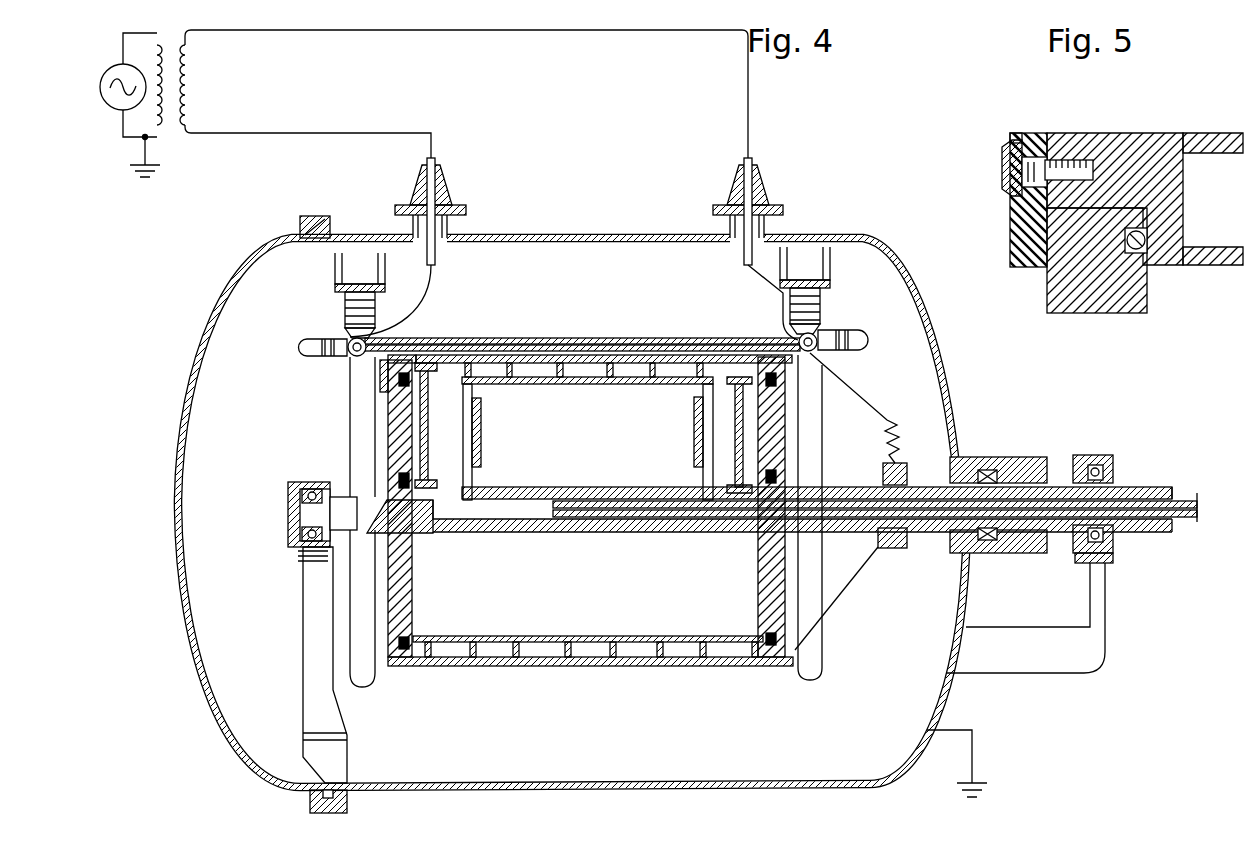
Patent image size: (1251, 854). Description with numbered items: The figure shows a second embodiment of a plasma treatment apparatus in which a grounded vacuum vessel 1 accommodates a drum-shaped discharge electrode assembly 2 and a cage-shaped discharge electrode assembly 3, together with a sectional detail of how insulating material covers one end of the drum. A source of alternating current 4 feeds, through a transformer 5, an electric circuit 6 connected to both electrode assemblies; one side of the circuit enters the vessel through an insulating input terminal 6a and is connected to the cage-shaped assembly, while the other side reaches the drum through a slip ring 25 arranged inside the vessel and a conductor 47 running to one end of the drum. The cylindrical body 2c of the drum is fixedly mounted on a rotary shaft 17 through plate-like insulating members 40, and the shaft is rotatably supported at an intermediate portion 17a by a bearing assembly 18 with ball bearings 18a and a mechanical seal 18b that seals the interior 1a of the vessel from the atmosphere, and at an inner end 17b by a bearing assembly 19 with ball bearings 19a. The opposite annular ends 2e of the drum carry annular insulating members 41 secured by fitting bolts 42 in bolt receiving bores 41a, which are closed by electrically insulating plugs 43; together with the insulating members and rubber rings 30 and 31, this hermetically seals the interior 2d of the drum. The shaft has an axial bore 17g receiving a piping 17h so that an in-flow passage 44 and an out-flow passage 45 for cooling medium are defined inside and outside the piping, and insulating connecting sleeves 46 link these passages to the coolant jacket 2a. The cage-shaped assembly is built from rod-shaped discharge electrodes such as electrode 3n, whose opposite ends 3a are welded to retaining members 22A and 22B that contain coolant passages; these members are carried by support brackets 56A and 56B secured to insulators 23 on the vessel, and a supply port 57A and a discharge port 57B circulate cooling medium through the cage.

In FIG. 4, the vacuum vessel 1 is at (388, 241).
In FIG. 4, the interior of the vacuum vessel 1a is at (573, 240).
In FIG. 4, the drum-shaped discharge electrode assembly 2 is at (532, 666).
In FIG. 5, the drum-shaped discharge electrode assembly 2 is at (1139, 135).
In FIG. 4, the coolant jacket 2a is at (493, 372).
In FIG. 4, the cylindrical body 2c is at (592, 666).
In FIG. 5, the cylindrical body 2c is at (1200, 133).
In FIG. 4, the interior of the drum-shaped discharge electrode assembly 2d is at (674, 622).
In FIG. 4, the annular ends 2e is at (385, 361).
In FIG. 5, the annular ends 2e is at (1038, 133).
In FIG. 4, the cage-shaped discharge electrode assembly 3 is at (565, 338).
In FIG. 4, the opposite ends of the rod-shaped discharge electrodes 3a is at (792, 340).
In FIG. 4, the rod-shaped discharge electrode 3n is at (646, 346).
In FIG. 4, the source of alternating current 4 is at (117, 112).
In FIG. 4, the transformer 5 is at (173, 127).
In FIG. 4, the electric circuit 6 is at (400, 31).
In FIG. 4, the input terminal 6a is at (437, 162).
In FIG. 4, the rotary shaft 17 is at (520, 533).
In FIG. 4, the intermediate portion of the rotary shaft 17a is at (945, 533).
In FIG. 4, the inner end of the rotary shaft 17b is at (330, 555).
In FIG. 4, the axial bore 17g is at (550, 508).
In FIG. 4, the piping 17h is at (1175, 516).
In FIG. 4, the bearing assembly 18 is at (980, 460).
In FIG. 4, the ball bearings 18a is at (1100, 465).
In FIG. 4, the mechanical seal 18b is at (1005, 482).
In FIG. 4, the bearing assembly 19 is at (300, 504).
In FIG. 4, the ball bearings 19a is at (300, 482).
In FIG. 4, the retaining member 22A is at (352, 700).
In FIG. 4, the retaining member 22B is at (810, 416).
In FIG. 4, the insulators 23 is at (822, 308).
In FIG. 4, the slip ring 25 is at (895, 550).
In FIG. 4, the rubber ring 30 is at (400, 380).
In FIG. 5, the rubber ring 30 is at (1150, 238).
In FIG. 4, the rubber ring 31 is at (400, 480).
In FIG. 4, the plate-like insulating member 40 is at (398, 430).
In FIG. 5, the plate-like insulating member 40 is at (1055, 300).
In FIG. 4, the annular insulating member 41 is at (382, 376).
In FIG. 5, the annular insulating member 41 is at (1012, 252).
In FIG. 5, the bolt receiving bore 41a is at (1014, 133).
In FIG. 5, the fitting bolt 42 is at (1010, 195).
In FIG. 5, the electrically insulating plug 43 is at (1001, 165).
In FIG. 4, the in-flow passage 44 is at (1172, 510).
In FIG. 4, the out-flow passage 45 is at (1140, 501).
In FIG. 4, the connecting sleeve 46 is at (476, 430).
In FIG. 4, the conductor 47 is at (828, 605).
In FIG. 4, the support bracket 56A is at (350, 339).
In FIG. 4, the support bracket 56B is at (816, 336).
In FIG. 4, the supply port 57A is at (335, 343).
In FIG. 4, the discharge port 57B is at (862, 331).